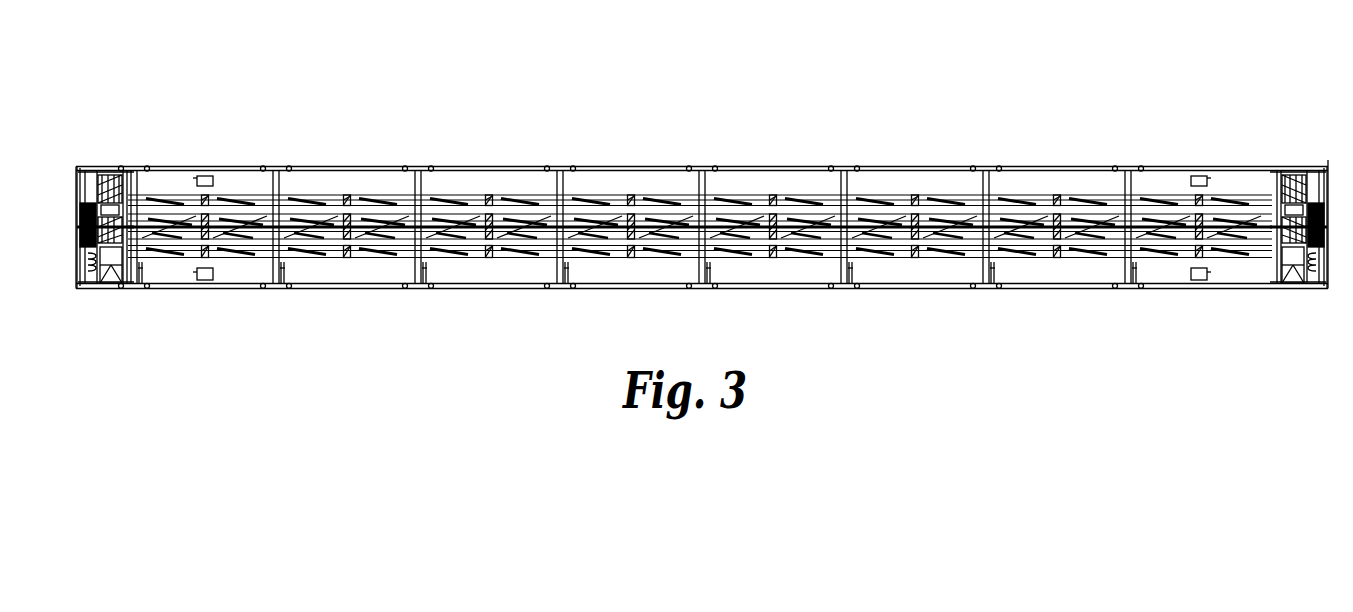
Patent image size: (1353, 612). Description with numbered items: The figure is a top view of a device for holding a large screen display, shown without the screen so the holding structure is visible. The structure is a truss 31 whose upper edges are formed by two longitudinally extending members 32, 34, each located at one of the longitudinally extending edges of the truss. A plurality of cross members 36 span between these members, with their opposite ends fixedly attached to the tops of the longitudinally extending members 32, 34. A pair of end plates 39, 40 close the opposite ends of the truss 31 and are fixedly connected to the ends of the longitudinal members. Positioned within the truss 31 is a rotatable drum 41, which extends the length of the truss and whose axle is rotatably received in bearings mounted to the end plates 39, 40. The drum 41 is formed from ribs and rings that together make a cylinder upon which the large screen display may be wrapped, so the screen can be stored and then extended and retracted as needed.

The truss 31 is at (627, 167).
The longitudinally extending member 32 is at (467, 167).
The longitudinally extending member 34 is at (795, 289).
The cross member 36 is at (413, 183).
The end plate 39 is at (75, 189).
The end plate 40 is at (1328, 197).
The rotatable drum 41 is at (884, 197).